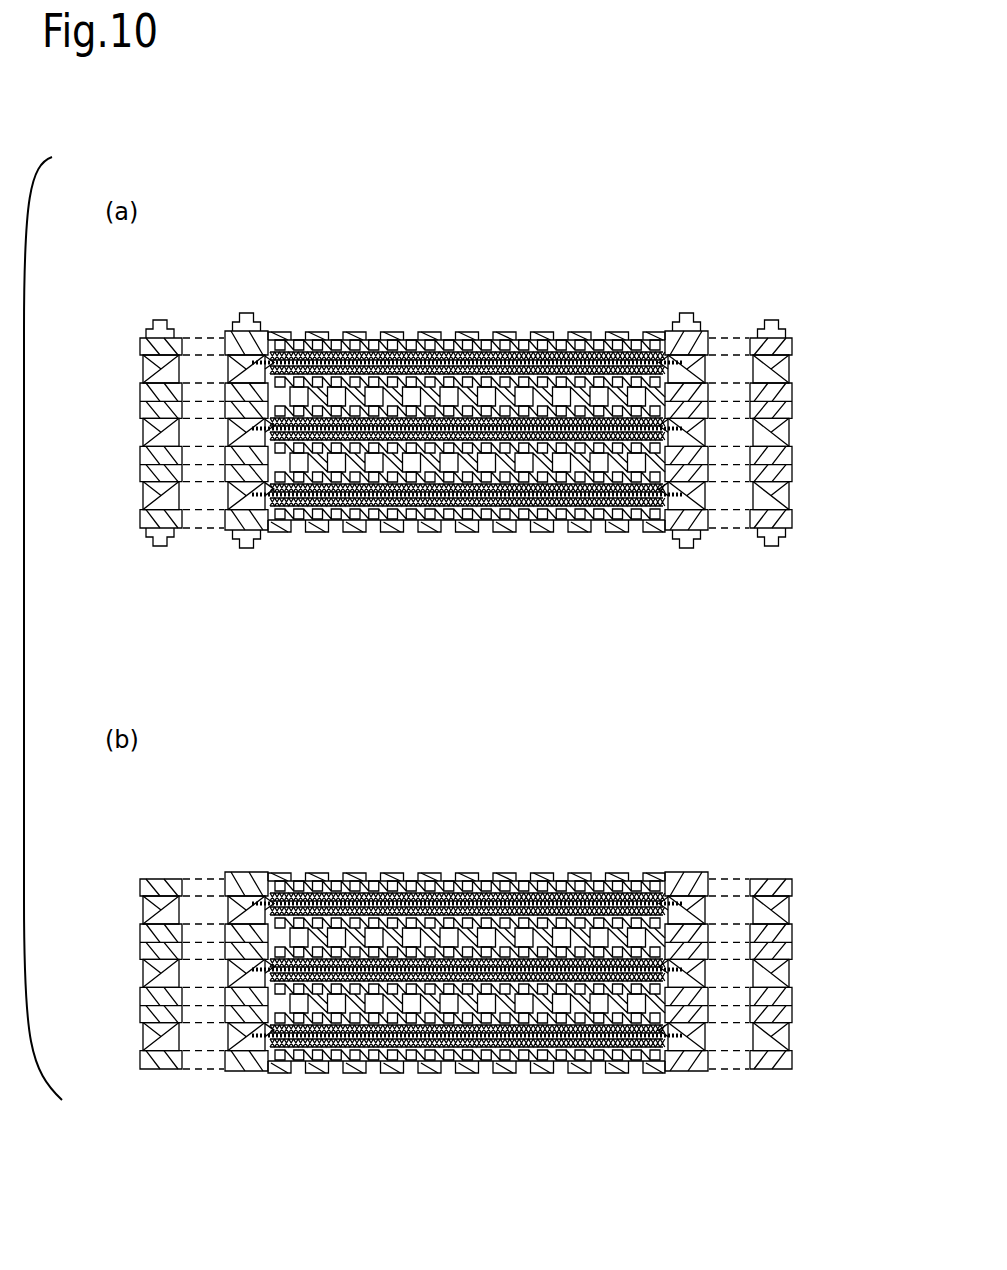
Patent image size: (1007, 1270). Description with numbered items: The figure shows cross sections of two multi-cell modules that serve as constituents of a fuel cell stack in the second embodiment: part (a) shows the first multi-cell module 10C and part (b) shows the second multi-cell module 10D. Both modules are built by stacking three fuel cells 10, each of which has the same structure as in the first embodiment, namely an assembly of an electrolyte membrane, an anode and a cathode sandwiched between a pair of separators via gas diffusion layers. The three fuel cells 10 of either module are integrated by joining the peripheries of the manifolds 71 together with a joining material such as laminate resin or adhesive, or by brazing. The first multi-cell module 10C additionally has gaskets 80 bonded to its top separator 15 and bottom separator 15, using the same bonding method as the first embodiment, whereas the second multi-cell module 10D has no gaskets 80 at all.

The fuel cell 10 is at (815, 1038).
The first multi-cell module 10C is at (663, 214).
The second multi-cell module 10D is at (671, 818).
The separator 15 is at (139, 521).
The manifold 71 is at (729, 876).
The gasket 80 is at (781, 578).